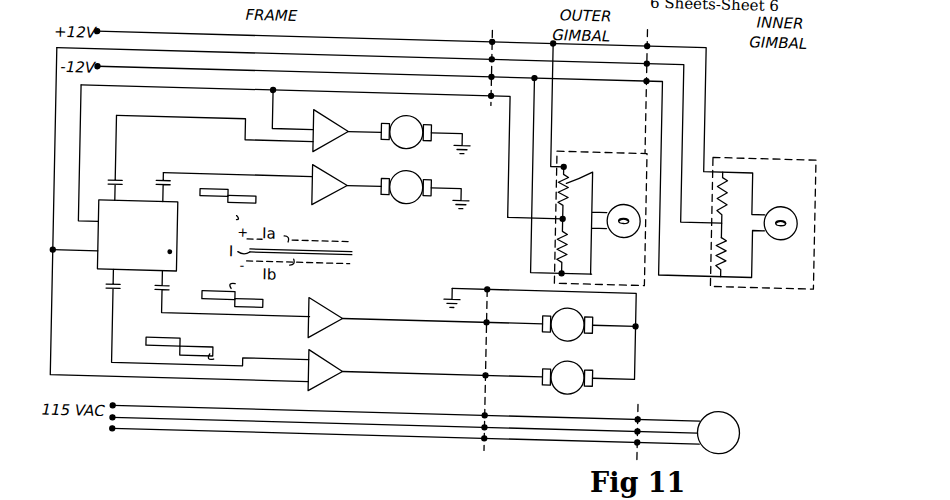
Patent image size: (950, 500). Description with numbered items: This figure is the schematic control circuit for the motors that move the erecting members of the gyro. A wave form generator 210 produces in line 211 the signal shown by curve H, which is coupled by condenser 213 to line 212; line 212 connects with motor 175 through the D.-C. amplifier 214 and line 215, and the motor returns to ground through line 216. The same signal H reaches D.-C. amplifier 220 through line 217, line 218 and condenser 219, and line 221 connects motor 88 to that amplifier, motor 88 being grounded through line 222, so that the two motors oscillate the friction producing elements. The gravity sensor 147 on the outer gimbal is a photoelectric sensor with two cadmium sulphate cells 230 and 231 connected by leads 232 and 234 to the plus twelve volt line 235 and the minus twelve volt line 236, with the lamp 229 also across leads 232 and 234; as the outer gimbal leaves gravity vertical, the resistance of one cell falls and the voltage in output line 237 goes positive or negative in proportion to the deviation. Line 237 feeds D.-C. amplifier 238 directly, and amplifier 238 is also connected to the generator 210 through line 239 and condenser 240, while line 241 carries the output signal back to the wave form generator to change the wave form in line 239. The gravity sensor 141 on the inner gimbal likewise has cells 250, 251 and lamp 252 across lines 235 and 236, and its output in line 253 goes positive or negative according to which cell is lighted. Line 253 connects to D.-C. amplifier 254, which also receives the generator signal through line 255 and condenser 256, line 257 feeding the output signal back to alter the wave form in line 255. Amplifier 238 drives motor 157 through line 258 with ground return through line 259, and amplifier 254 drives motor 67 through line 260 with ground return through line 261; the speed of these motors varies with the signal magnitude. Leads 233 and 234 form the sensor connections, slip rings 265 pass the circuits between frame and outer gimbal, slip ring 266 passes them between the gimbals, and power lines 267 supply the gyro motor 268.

The line 241 is at (226, 98).
The line 253 is at (53, 193).
The +12 volt line 235 is at (518, 42).
The slip rings 265 is at (488, 96).
The slip ring 266 is at (643, 76).
The −12 volt line 236 is at (597, 80).
The lead 232 is at (551, 134).
The conductor 233 is at (508, 212).
The lead 234 is at (531, 246).
The line 239 is at (238, 134).
The output line 237 is at (290, 131).
The condenser 240 is at (114, 192).
The condenser 213 is at (158, 190).
The line 212 is at (194, 178).
The wave form generator 210 is at (171, 260).
The line 211 is at (168, 193).
The line 217 is at (170, 290).
The line 257 is at (78, 264).
The condenser 256 is at (107, 295).
The condenser 219 is at (158, 304).
The line 255 is at (114, 328).
The D.-C. amplifier 214 is at (309, 194).
The line 218 is at (292, 326).
The D.-C. amplifier 238 is at (330, 114).
The line 215 is at (360, 189).
The D.-C. amplifier 220 is at (328, 312).
The D.-C. amplifier 254 is at (326, 382).
The motor 157 is at (398, 122).
The line 258 is at (370, 138).
The line 259 is at (466, 142).
The motor 175 is at (410, 202).
The line 216 is at (466, 196).
The line 221 is at (426, 324).
The line 260 is at (456, 378).
The motor 88 is at (562, 332).
The motor 67 is at (562, 384).
The line 222 is at (636, 325).
The line 261 is at (634, 378).
The cadmium sulphate cell 230 is at (598, 176).
The cadmium sulphate cell 231 is at (570, 268).
The lamp 229 is at (640, 236).
The gravity sensor 147 is at (648, 290).
The gravity sensor 141 is at (780, 288).
The cadmium sulphate cell 251 is at (719, 175).
The cadmium sulphate cell 250 is at (720, 246).
The lamp 252 is at (796, 230).
The power lines 267 is at (163, 415).
The gyro motor 268 is at (716, 410).